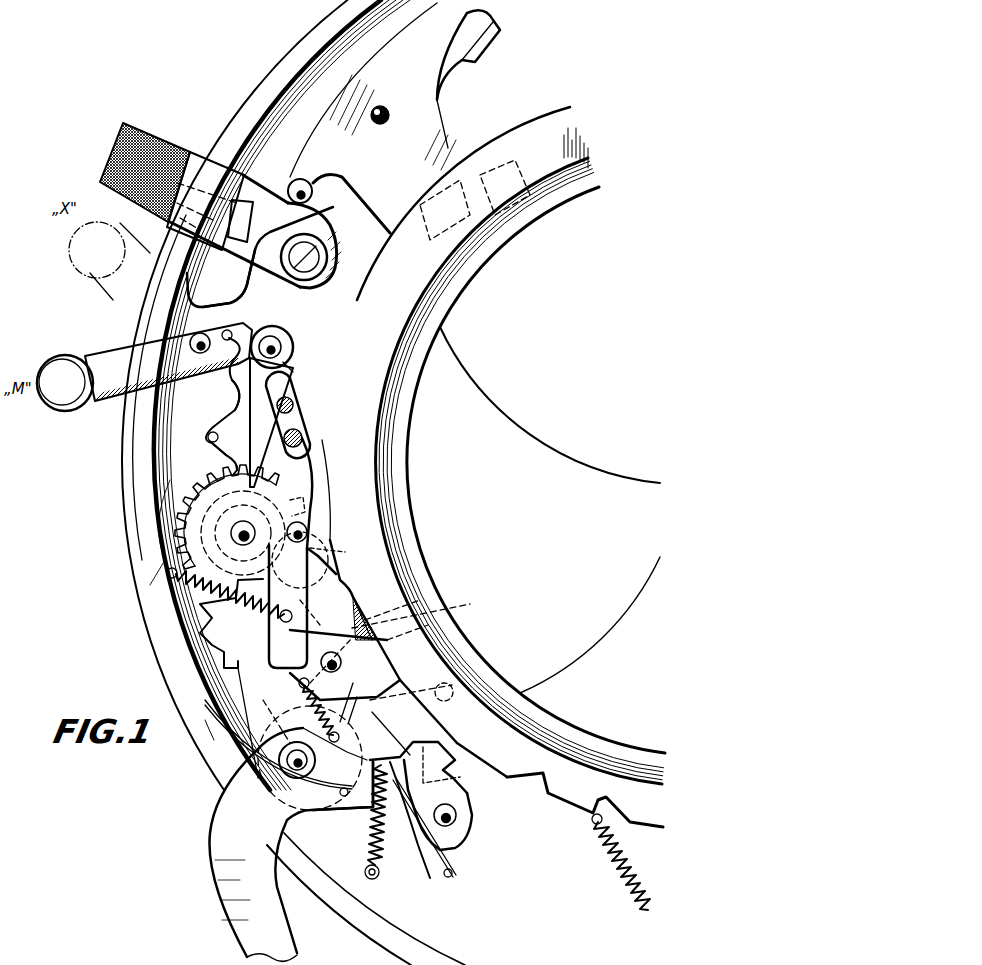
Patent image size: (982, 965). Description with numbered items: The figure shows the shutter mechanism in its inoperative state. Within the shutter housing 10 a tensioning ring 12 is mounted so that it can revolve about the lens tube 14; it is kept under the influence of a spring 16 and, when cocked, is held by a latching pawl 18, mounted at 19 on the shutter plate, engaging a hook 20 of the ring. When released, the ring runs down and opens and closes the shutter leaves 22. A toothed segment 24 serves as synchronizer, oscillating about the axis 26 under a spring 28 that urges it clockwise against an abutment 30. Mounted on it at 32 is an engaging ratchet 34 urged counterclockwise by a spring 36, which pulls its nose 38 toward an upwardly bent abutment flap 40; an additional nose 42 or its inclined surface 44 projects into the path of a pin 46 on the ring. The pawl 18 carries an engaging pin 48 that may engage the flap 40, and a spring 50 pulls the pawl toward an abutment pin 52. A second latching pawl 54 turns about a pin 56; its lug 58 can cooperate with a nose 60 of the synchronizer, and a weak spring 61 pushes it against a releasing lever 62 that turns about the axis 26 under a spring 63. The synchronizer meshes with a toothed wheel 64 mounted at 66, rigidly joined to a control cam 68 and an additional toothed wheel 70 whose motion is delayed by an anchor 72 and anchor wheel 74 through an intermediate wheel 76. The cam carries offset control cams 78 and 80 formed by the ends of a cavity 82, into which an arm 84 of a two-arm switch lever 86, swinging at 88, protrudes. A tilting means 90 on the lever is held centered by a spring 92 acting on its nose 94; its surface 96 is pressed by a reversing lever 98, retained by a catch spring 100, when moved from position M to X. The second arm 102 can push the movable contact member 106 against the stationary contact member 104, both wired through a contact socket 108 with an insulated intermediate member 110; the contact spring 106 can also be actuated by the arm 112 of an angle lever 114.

The shutter housing 10 is at (300, 68).
The tensioning ring 12 is at (282, 395).
The lens tube 14 is at (458, 278).
The spring 16 is at (612, 878).
The latching pawl 18 is at (310, 468).
The mounting of the latching pawl 19 is at (311, 522).
The hook 20 is at (352, 590).
The shutter leaves 22 is at (633, 603).
The toothed segment 24 is at (235, 700).
The axis 26 is at (283, 790).
The spring 28 is at (383, 840).
The abutment 30 is at (343, 800).
The pivot of engaging ratchet 32 is at (369, 620).
The engaging ratchet 34 is at (348, 702).
The spring 36 is at (316, 712).
The nose 38 is at (285, 577).
The abutment flap 40 is at (240, 652).
The additional nose 42 is at (420, 650).
The inclined surface 44 is at (386, 696).
The pin 46 is at (455, 685).
The engaging pin 48 is at (296, 672).
The spring 50 is at (152, 588).
The abutment pin 52 is at (243, 533).
The latching pawl 54 is at (452, 790).
The pin 56 is at (458, 817).
The lug 58 is at (448, 742).
The nose 60 is at (446, 777).
The weak spring 61 is at (455, 860).
The releasing lever 62 is at (225, 890).
The spring 63 is at (213, 736).
The toothed wheel 64 is at (175, 528).
The mounting of toothed wheel 66 is at (243, 520).
The control cam 68 is at (195, 497).
The additional toothed wheel 70 is at (205, 478).
The anchor 72 is at (358, 610).
The anchor wheel 74 is at (337, 568).
The intermediate wheel 76 is at (233, 626).
The control cam 78 is at (200, 582).
The control cam 80 is at (230, 470).
The cavity 82 is at (272, 490).
The arm 84 is at (250, 437).
The two-arm switch lever 86 is at (250, 377).
The pivot of switch lever 88 is at (268, 340).
The tilting means 90 is at (285, 344).
The spring 92 is at (305, 418).
The nose 94 is at (292, 380).
The surface 96 is at (294, 360).
The reversing lever 98 is at (60, 360).
The catch spring 100 is at (225, 408).
The second arm 102 is at (200, 290).
The stationary contact member 104 is at (290, 283).
The elastically movable contact member 106 is at (326, 212).
The contact socket 108 is at (175, 152).
The intermediate member 110 is at (170, 222).
The arm 112 is at (305, 180).
The angle lever 114 is at (430, 130).